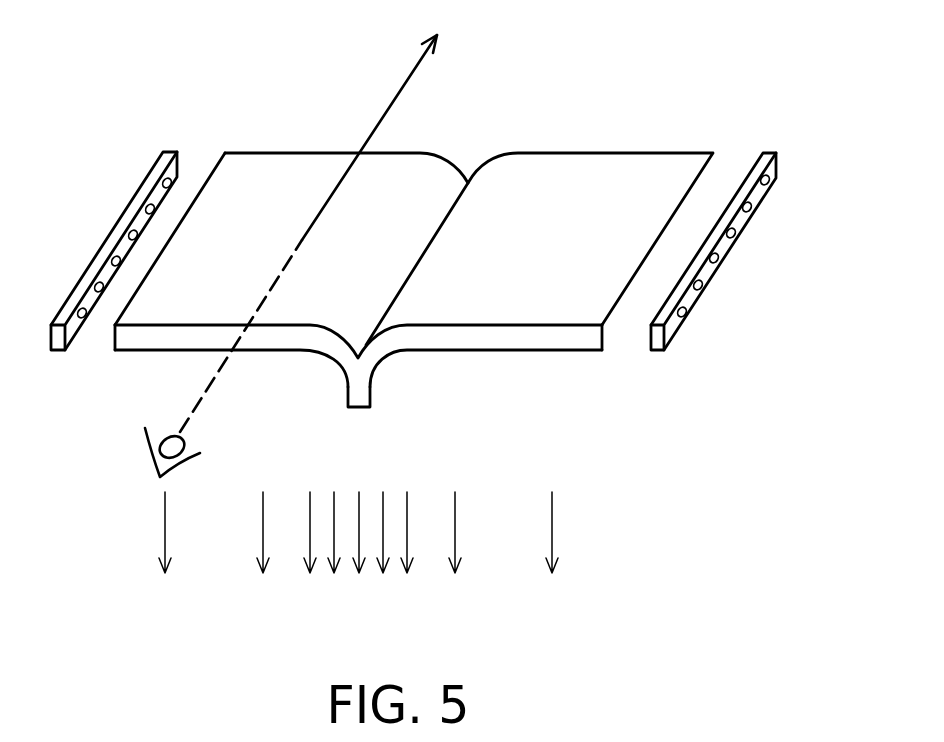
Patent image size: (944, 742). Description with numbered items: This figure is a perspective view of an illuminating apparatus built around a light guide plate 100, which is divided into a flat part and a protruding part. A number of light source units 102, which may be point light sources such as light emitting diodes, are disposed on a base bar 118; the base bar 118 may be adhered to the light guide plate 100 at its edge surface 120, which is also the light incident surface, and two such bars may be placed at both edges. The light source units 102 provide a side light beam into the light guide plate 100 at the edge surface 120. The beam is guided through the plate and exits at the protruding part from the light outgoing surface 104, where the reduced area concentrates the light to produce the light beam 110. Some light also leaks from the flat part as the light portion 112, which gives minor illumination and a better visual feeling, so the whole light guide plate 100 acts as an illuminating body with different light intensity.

The light guide plate 100 is at (455, 350).
The light source units 102 is at (174, 180).
The light outgoing surface 104 is at (358, 408).
The light beam 110 is at (293, 580).
The light portion 112 is at (150, 580).
The base bar 118 is at (167, 152).
The edge surface 120 is at (115, 340).